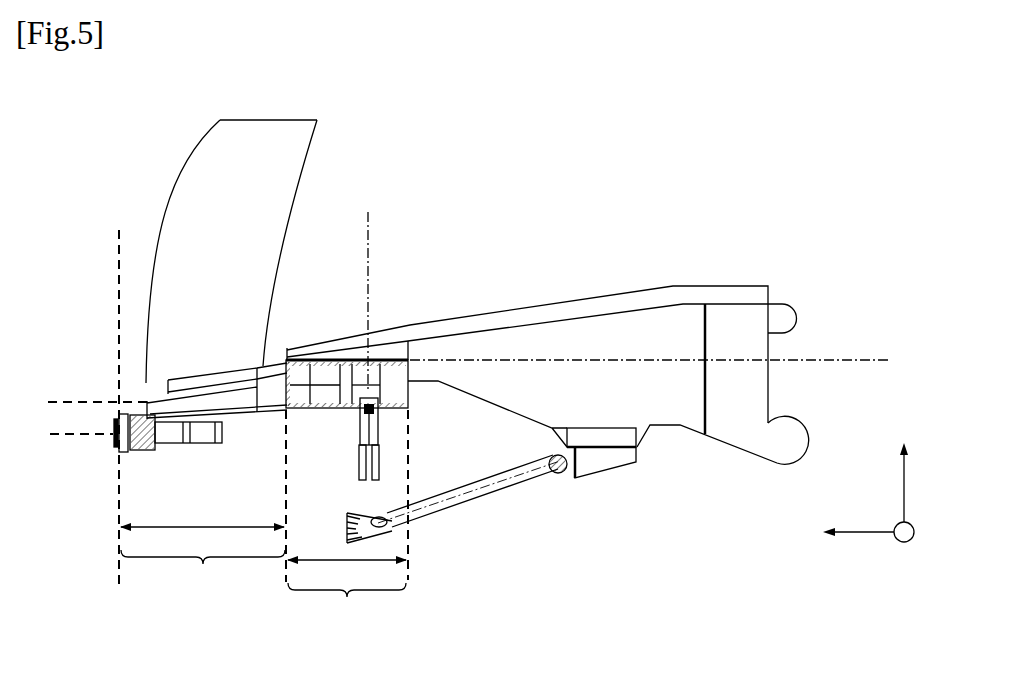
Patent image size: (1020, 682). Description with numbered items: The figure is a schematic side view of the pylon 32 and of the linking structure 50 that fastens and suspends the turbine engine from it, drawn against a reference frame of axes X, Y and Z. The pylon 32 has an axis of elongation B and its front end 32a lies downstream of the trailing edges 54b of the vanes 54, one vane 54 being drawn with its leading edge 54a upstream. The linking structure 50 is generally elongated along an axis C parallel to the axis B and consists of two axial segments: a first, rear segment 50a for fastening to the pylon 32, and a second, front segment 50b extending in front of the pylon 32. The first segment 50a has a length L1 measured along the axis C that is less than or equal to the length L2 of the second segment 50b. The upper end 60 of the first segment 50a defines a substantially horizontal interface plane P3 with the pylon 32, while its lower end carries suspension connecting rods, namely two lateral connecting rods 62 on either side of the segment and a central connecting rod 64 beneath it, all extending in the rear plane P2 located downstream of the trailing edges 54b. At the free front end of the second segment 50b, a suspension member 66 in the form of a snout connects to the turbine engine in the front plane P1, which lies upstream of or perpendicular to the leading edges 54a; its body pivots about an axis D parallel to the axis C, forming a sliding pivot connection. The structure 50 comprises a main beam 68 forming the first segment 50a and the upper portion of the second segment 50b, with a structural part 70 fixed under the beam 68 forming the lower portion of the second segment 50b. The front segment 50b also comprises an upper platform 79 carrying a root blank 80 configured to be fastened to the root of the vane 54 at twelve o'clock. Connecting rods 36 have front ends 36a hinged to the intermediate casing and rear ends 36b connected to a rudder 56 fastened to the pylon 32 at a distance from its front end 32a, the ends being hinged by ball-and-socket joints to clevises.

The pylon 32 is at (564, 351).
The front end of the pylon 32a is at (289, 355).
The connecting rod 36 is at (470, 526).
The front end of the connecting rod 36a is at (407, 530).
The rear end of the connecting rod 36b is at (557, 474).
The linking structure 50 is at (172, 420).
The first axial segment 50a is at (347, 523).
The second axial segment 50b is at (203, 581).
The vane 54 is at (249, 251).
The leading edge 54a is at (192, 158).
The trailing edge 54b is at (277, 263).
The rudder 56 is at (620, 463).
The upper end 60 is at (368, 378).
The lateral connecting rod 62 is at (381, 456).
The central connecting rod 64 is at (380, 432).
The suspension member 66 is at (116, 455).
The main beam 68 is at (327, 410).
The structural part 70 is at (168, 444).
The upper platform 79 is at (160, 387).
The root blank 80 is at (188, 377).
The front plane P1 is at (117, 248).
The rear plane P2 is at (370, 252).
The interface plane P3 is at (397, 353).
The axis of elongation of the pylon B is at (838, 358).
The axis of elongation of the linking structure C is at (68, 405).
The pivot axis D is at (78, 437).
The length of the first segment L1 is at (338, 556).
The length of the second segment L2 is at (266, 524).
The X axis X is at (848, 535).
The Y axis Y is at (904, 464).
The Z axis Z is at (917, 539).